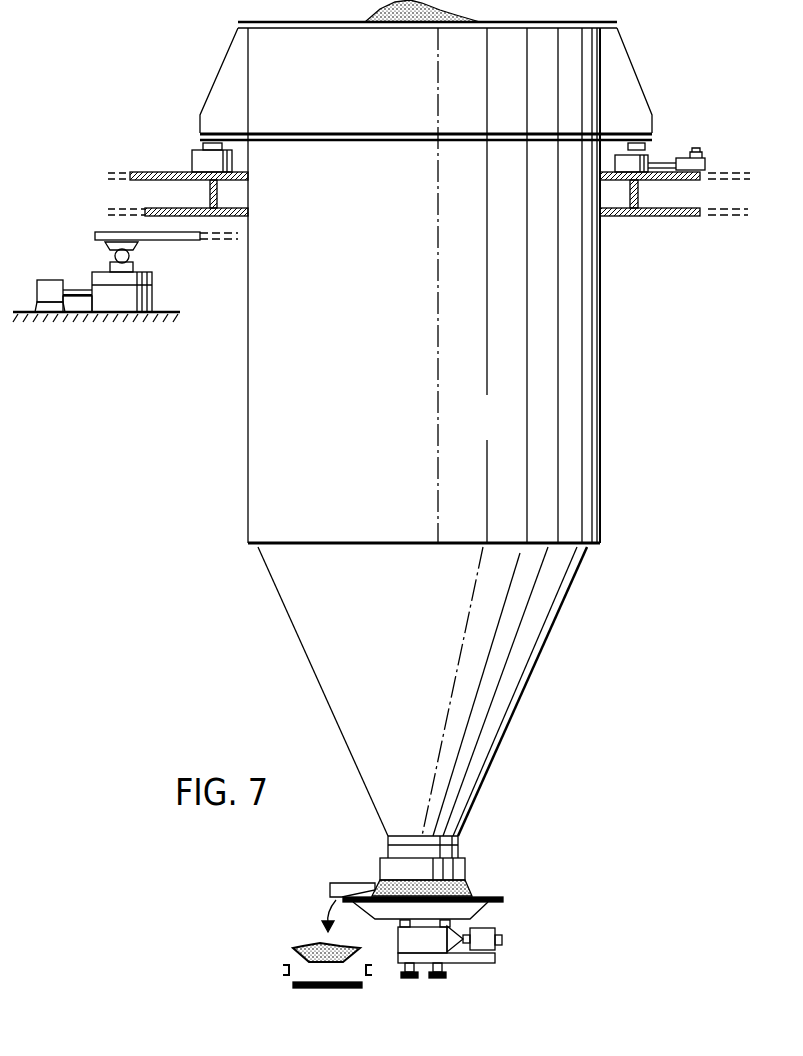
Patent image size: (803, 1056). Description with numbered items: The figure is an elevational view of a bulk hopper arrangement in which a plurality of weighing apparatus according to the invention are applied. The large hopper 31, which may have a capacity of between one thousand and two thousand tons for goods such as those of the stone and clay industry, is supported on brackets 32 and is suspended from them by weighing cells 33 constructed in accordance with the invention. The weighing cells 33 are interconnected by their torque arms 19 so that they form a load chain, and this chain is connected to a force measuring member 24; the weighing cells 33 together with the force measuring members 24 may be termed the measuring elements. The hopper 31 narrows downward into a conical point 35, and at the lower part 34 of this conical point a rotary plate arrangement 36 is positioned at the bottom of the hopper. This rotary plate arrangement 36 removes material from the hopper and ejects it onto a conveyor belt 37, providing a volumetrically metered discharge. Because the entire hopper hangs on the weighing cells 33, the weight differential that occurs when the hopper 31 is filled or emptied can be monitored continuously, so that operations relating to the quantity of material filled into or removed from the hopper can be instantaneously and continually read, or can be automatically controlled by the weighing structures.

The torque arm 19 is at (78, 290).
The force measuring member 24 is at (45, 280).
The hopper 31 is at (513, 417).
The bracket 32 is at (627, 78).
The weighing cell 33 is at (152, 292).
The lower part 34 is at (467, 798).
The conical point 35 is at (533, 641).
The rotary plate arrangement 36 is at (488, 930).
The conveyor belt 37 is at (325, 965).